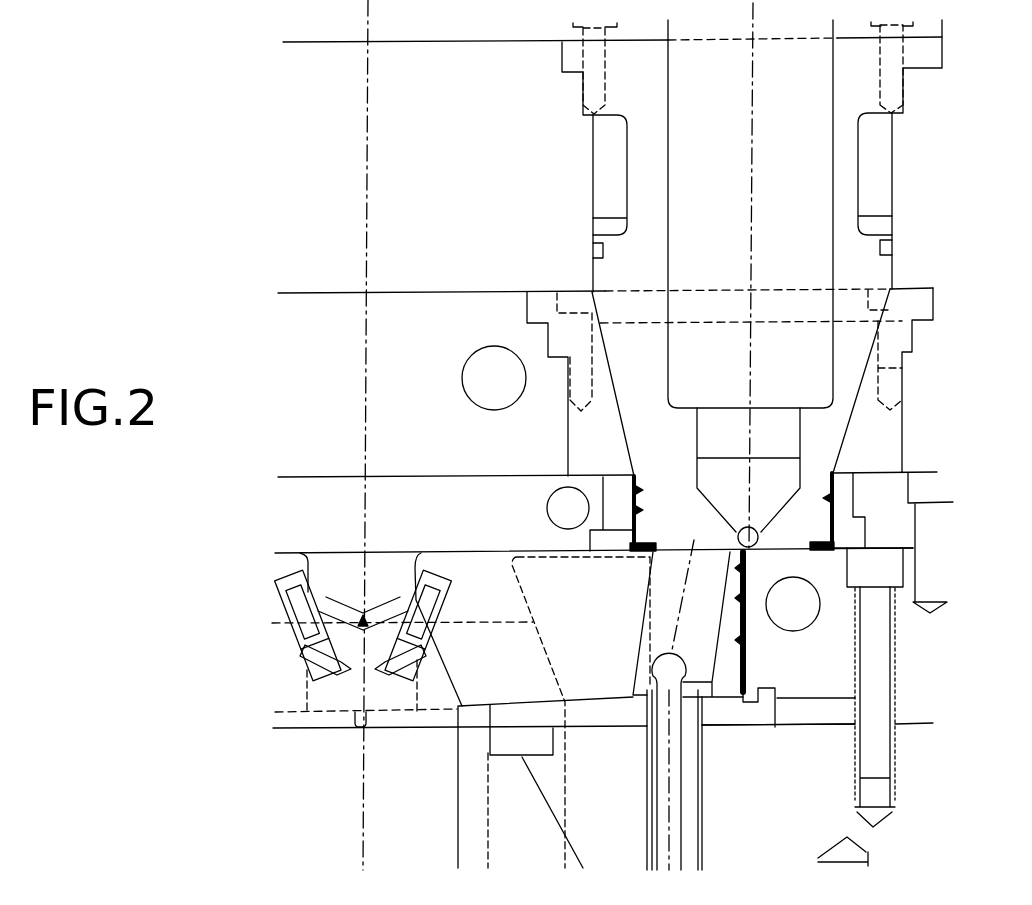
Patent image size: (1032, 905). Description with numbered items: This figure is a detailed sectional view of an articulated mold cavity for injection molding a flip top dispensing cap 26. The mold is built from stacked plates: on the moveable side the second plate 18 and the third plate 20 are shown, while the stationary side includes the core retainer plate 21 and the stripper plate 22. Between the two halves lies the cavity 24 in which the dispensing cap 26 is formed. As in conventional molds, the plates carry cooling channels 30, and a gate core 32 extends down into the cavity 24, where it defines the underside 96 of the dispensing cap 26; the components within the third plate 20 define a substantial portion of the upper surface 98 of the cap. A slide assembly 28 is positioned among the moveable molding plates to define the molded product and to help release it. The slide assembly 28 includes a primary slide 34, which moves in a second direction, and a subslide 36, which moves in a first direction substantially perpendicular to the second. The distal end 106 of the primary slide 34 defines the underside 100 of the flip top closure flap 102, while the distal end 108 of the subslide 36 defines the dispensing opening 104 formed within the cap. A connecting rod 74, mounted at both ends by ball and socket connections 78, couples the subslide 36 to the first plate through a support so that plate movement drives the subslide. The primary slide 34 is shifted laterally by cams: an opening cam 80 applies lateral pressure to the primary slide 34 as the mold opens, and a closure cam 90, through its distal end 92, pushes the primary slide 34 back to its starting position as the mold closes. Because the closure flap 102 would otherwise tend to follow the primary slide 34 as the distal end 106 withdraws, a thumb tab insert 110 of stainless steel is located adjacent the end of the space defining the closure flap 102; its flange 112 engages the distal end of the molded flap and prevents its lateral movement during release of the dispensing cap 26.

The second plate 18 is at (900, 805).
The third plate 20 is at (957, 658).
The core retainer plate 21 is at (965, 146).
The stripper plate 22 is at (990, 346).
The cavity 24 is at (748, 643).
The dispensing cap 26 is at (980, 533).
The slide assembly 28 is at (485, 688).
The cooling channels 30 is at (953, 196).
The gate core 32 is at (732, 142).
The primary slide 34 is at (523, 687).
The subslide 36 is at (658, 648).
The connecting rod 74 is at (665, 858).
The ball and socket connections 78 is at (675, 650).
The opening cam 80 is at (573, 685).
The closure cam 90 is at (395, 568).
The distal end of closure cam 92 is at (436, 622).
The underside of dispensing cap 96 is at (810, 547).
The upper surface of dispensing cap 98 is at (966, 577).
The underside of flip top closure flap 100 is at (742, 633).
The flip top closure flap 102 is at (748, 613).
The dispensing opening 104 is at (713, 548).
The distal end of primary slide 106 is at (717, 696).
The distal end of subslide 108 is at (668, 548).
The thumb tab insert 110 is at (787, 790).
The flange 112 is at (763, 697).